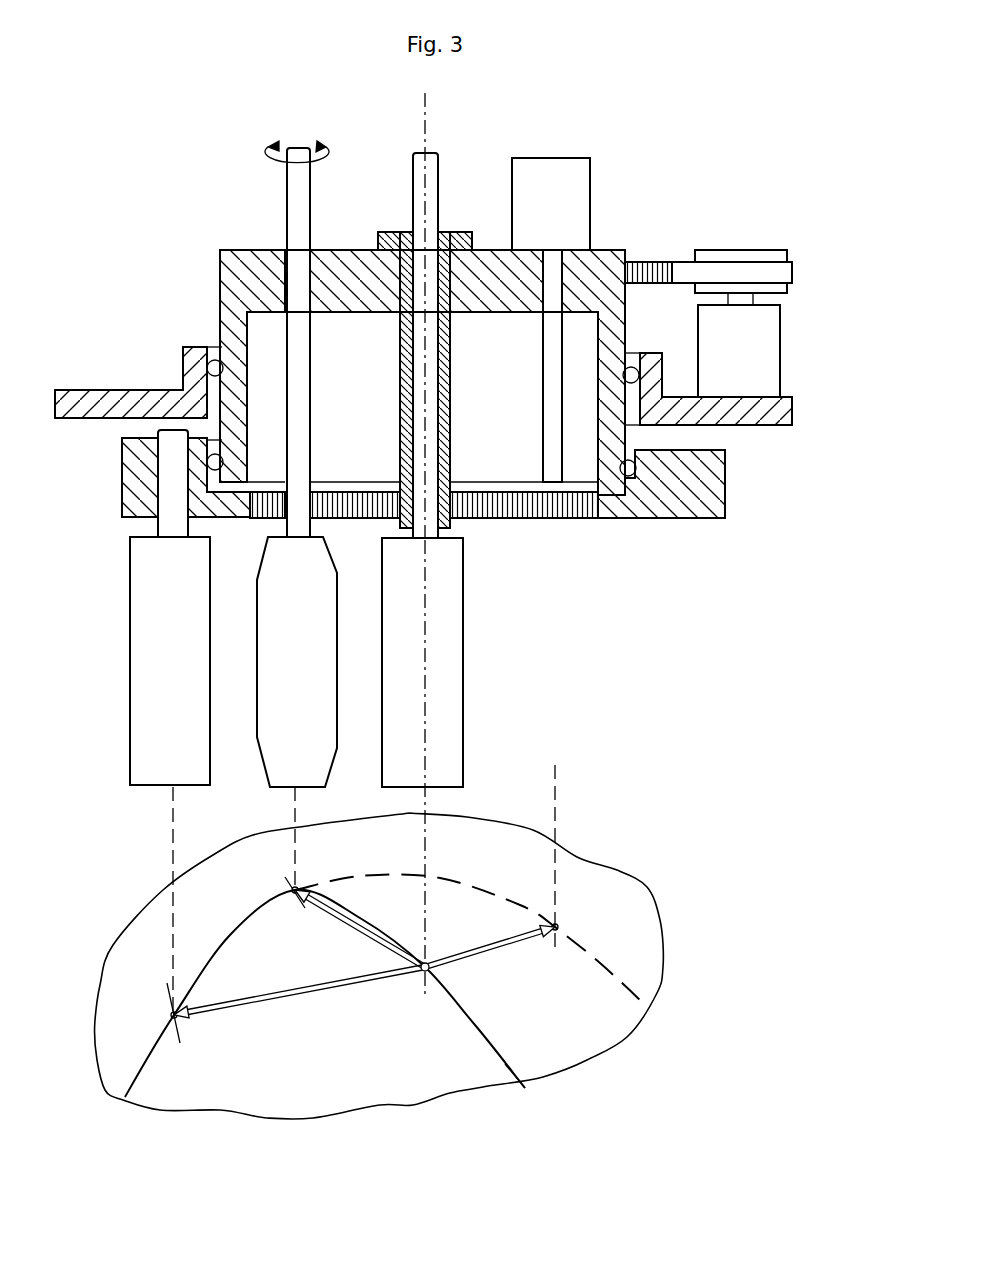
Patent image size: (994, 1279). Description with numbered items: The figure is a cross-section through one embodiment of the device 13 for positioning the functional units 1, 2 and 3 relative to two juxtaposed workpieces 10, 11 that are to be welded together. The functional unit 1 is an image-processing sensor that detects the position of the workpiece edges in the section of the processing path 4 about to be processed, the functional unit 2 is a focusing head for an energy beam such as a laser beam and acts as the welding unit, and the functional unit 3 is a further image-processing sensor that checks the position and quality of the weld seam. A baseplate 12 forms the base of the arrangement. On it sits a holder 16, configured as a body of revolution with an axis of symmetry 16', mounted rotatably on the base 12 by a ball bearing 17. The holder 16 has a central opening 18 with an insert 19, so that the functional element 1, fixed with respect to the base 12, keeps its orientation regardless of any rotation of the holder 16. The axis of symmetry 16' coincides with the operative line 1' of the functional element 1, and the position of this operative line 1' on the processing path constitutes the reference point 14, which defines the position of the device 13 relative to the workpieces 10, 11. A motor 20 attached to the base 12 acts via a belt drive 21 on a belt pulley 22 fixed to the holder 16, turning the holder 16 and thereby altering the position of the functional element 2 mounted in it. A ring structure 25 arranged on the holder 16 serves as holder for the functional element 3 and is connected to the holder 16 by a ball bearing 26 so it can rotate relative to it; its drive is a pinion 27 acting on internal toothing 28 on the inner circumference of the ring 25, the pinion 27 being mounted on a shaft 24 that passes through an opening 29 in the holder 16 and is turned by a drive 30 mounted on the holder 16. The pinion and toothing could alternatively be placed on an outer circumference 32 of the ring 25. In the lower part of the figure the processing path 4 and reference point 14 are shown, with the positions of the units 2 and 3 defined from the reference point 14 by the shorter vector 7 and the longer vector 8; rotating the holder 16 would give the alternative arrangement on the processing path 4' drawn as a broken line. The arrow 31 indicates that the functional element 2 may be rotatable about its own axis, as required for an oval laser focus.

The functional unit 1 is at (438, 470).
The operative line 1' is at (462, 767).
The functional unit 2 is at (318, 665).
The functional unit 3 is at (195, 663).
The processing path 4 is at (325, 993).
The processing path 4' is at (470, 939).
The vector 7 is at (497, 953).
The vector 8 is at (303, 993).
The workpiece 10 is at (597, 887).
The workpiece 11 is at (525, 1050).
The baseplate 12 is at (780, 413).
The device 13 is at (163, 176).
The reference point 14 is at (422, 975).
The holder 16 is at (702, 442).
The axis of symmetry 16' is at (452, 316).
The ball bearing 17 is at (638, 362).
The central opening 18 is at (405, 236).
The insert 19 is at (402, 418).
The motor 20 is at (760, 330).
The belt drive 21 is at (657, 260).
The belt pulley 22 is at (245, 262).
The shaft 24 is at (552, 410).
The ring structure 25 is at (732, 508).
The ball bearing 26 is at (632, 476).
The pinion 27 is at (572, 520).
The internal toothing 28 is at (487, 507).
The opening 29 is at (548, 313).
The drive 30 is at (572, 175).
The arrow 31 is at (319, 141).
The outer circumference 32 is at (120, 492).